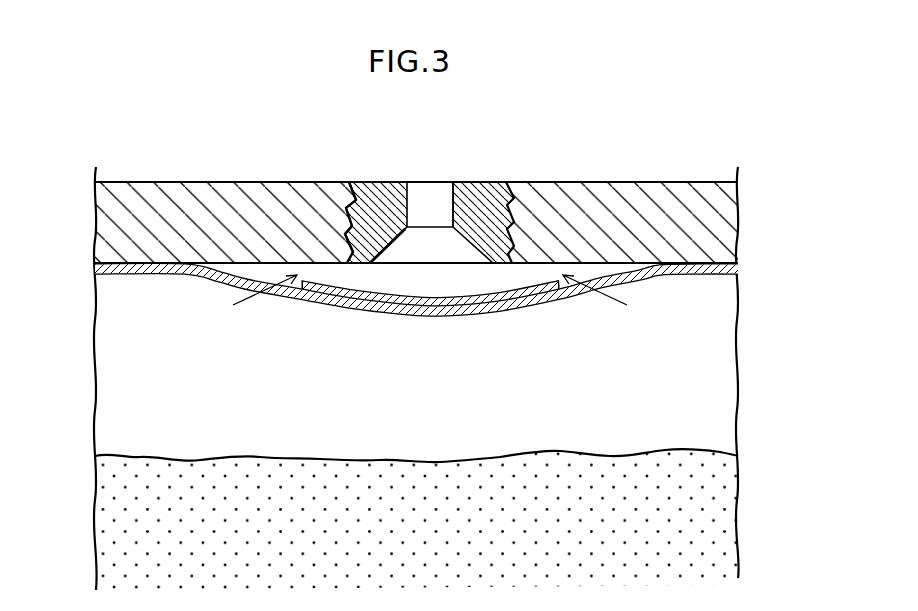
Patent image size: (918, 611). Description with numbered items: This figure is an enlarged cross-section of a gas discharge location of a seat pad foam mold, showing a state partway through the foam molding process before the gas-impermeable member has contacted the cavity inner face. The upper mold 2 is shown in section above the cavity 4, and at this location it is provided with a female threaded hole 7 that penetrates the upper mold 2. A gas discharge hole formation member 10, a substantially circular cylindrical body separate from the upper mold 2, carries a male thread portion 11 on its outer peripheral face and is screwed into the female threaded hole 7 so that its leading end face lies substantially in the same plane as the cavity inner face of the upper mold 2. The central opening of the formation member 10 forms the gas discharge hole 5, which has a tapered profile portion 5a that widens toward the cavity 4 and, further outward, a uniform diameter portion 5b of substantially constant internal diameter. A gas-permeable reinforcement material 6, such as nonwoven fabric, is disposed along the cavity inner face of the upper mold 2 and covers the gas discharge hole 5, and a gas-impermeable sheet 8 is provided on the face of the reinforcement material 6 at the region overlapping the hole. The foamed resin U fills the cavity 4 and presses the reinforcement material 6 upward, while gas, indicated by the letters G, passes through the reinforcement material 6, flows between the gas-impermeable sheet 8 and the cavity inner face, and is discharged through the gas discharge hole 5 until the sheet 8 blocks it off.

The upper mold 2 is at (683, 182).
The cavity 4 is at (729, 393).
The gas discharge hole 5 is at (423, 181).
The tapered profile portion 5a is at (397, 240).
The uniform diameter portion 5b is at (447, 192).
The reinforcement material 6 is at (708, 277).
The female threaded hole 7 is at (492, 186).
The gas-impermeable sheet 8 is at (526, 284).
The gas discharge hole formation member 10 is at (378, 182).
The male thread portion 11 is at (343, 207).
The gas flow G is at (252, 298).
The foamed resin U is at (110, 515).